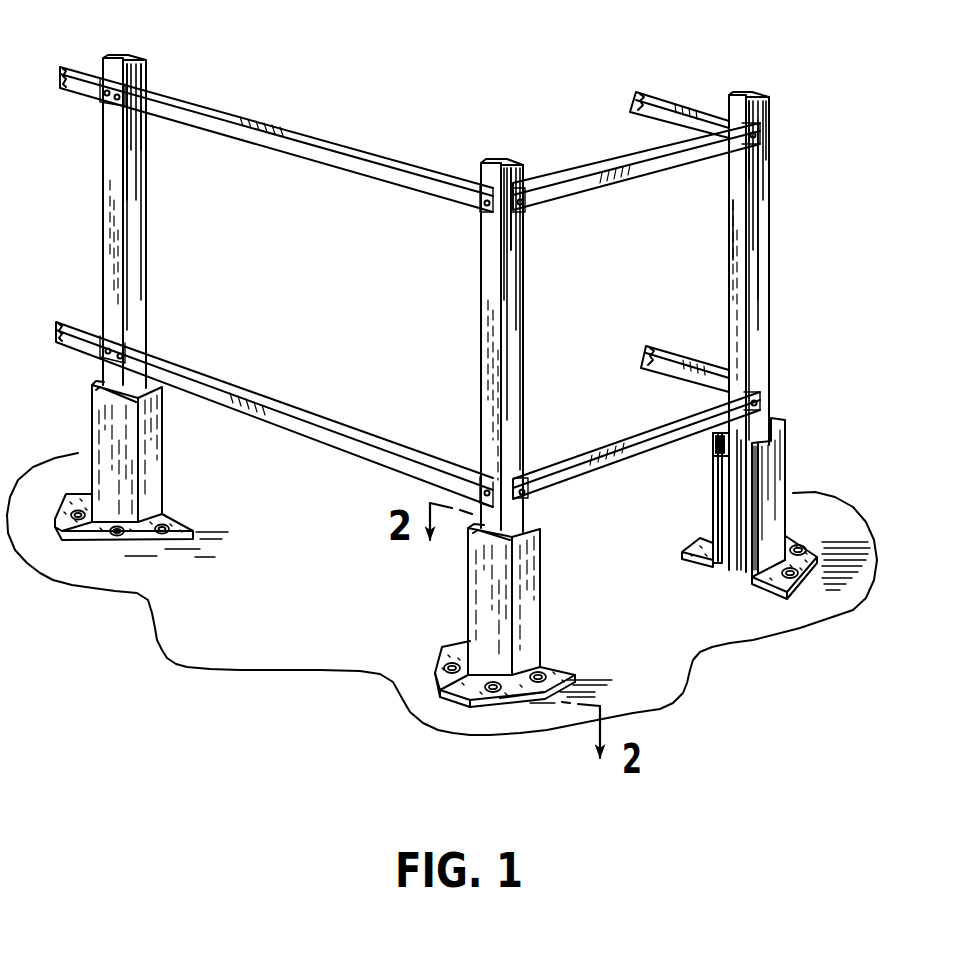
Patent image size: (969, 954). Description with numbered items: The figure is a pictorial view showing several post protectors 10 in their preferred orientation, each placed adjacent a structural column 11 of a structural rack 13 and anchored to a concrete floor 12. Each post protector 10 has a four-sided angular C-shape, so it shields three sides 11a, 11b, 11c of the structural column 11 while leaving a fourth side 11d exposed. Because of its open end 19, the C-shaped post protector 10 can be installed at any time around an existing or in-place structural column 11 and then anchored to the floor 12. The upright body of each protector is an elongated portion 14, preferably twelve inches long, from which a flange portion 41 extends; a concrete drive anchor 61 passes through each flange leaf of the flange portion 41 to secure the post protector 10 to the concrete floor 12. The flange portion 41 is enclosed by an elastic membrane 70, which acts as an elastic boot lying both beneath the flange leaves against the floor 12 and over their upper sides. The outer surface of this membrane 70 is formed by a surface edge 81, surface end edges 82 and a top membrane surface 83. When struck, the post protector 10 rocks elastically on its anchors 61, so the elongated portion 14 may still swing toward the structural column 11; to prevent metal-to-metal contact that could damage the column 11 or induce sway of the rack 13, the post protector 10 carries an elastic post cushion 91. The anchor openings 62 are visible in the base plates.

The post protector 10 is at (167, 463).
The structural column 11 is at (152, 213).
The side of structural column 11a is at (137, 173).
The side of structural column 11b is at (112, 168).
The side of structural column 11c is at (117, 55).
The fourth side of structural column 11d is at (140, 62).
The concrete floor 12 is at (742, 628).
The structural rack 13 is at (348, 117).
The elongated portion 14 is at (90, 427).
The open end 19 is at (712, 493).
The flange portion 41 is at (428, 688).
The concrete drive anchor 61 is at (164, 534).
The anchor hole 62 is at (117, 536).
The elastic membrane 70 is at (82, 540).
The surface edge 81 is at (523, 703).
The surface end edge 82 is at (697, 560).
The top membrane surface 83 is at (577, 683).
The elastic post cushion 91 is at (712, 447).